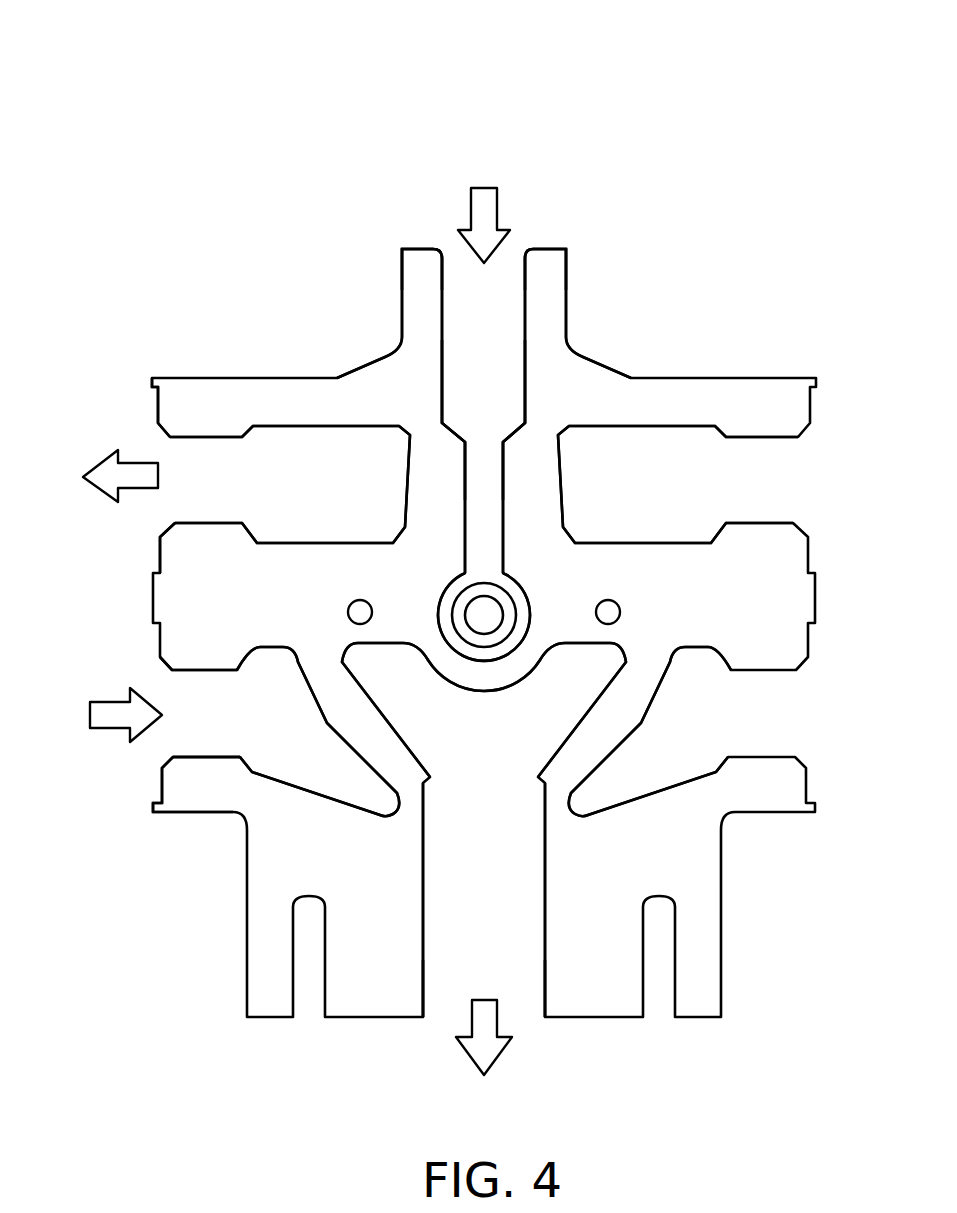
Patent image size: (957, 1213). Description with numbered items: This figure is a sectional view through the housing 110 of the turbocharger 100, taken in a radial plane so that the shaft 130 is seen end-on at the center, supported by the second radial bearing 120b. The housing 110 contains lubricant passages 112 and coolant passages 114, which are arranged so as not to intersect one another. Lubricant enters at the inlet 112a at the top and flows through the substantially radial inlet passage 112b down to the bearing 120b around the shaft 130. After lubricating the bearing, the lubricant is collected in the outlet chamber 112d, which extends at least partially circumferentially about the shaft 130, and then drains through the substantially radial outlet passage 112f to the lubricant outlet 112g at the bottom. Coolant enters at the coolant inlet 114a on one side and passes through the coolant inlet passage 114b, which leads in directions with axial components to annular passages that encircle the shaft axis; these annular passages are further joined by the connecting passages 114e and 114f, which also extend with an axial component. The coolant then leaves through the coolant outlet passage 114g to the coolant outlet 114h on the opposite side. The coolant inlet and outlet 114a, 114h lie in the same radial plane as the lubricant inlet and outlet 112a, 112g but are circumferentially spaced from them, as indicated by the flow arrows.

The turbocharger 100 is at (770, 78).
The housing 110 is at (745, 398).
The lubricant passages 112 is at (497, 308).
The inlet 112a is at (508, 265).
The inlet passage 112b is at (500, 382).
The outlet chamber 112d is at (511, 750).
The outlet passage 112f is at (507, 922).
The lubricant outlet 112g is at (518, 1012).
The coolant passages 114 is at (178, 698).
The coolant inlet 114a is at (160, 742).
The coolant inlet passage 114b is at (315, 745).
The connecting passage 114e is at (730, 733).
The connecting passage 114f is at (668, 498).
The coolant outlet passage 114g is at (330, 500).
The coolant outlet 114h is at (158, 448).
The second radial bearing 120b is at (505, 600).
The shaft 130 is at (470, 617).